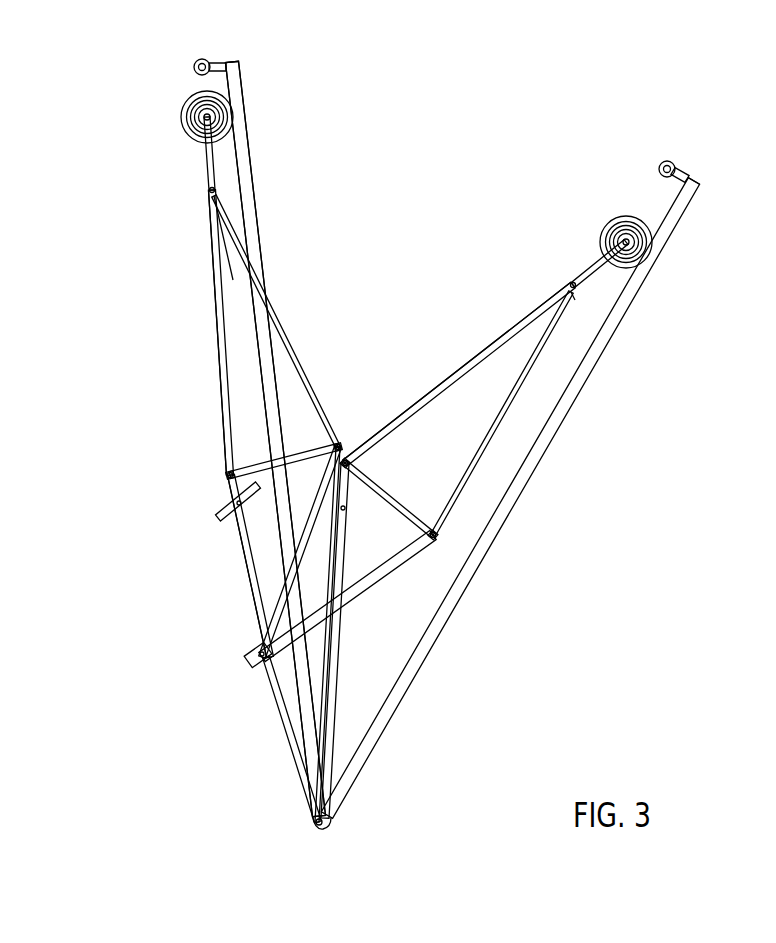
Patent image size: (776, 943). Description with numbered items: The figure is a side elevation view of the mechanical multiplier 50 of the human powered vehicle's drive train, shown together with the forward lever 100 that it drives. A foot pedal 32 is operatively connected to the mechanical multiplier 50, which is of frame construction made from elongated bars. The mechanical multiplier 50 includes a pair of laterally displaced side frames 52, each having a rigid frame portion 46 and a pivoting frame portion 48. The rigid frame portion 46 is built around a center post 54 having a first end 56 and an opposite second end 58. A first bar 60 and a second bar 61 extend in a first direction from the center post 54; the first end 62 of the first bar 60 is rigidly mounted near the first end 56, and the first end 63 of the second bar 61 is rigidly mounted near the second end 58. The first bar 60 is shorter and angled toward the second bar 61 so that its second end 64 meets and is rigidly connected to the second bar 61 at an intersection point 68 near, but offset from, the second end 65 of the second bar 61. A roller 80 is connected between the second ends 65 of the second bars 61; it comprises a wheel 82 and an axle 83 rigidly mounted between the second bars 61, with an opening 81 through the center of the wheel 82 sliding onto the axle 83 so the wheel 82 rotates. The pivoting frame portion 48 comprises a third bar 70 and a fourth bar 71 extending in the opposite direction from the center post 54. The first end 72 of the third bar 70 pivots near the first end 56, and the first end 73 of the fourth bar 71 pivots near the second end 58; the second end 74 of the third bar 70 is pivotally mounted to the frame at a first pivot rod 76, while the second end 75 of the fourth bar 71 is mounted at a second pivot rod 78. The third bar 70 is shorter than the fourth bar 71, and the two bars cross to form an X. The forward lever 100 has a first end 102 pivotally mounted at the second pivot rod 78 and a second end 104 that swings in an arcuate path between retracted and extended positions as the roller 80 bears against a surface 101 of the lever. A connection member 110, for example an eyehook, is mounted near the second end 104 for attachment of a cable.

The foot pedal 32 is at (218, 521).
The rigid frame portion 46 is at (332, 382).
The pivoting frame portion 48 is at (247, 593).
The mechanical multiplier 50 is at (212, 283).
The side frame 52 is at (217, 338).
The center post 54 is at (250, 467).
The first end of center post 56 is at (333, 446).
The second end of center post 58 is at (237, 466).
The first bar 60 is at (290, 340).
The second bar 61 is at (215, 378).
The first end of first bar 62 is at (343, 441).
The first end of second bar 63 is at (228, 467).
The second end of first bar 64 is at (222, 226).
The second end of second bar 65 is at (196, 133).
The intersection point 68 is at (204, 194).
The third bar 70 is at (313, 529).
The fourth bar 71 is at (252, 561).
The first end of third bar 72 is at (330, 463).
The first end of fourth bar 73 is at (228, 479).
The second end of third bar 74 is at (268, 638).
The second end of fourth bar 75 is at (313, 810).
The first pivot rod 76 is at (249, 663).
The second pivot rod 78 is at (316, 834).
The roller 80 is at (182, 122).
The opening 81 is at (209, 118).
The wheel 82 is at (192, 96).
The axle 83 is at (222, 142).
The forward lever 100 is at (245, 155).
The surface 101 is at (396, 673).
The first end of forward lever 102 is at (312, 747).
The second end of forward lever 104 is at (240, 82).
The connection member 110 is at (195, 64).